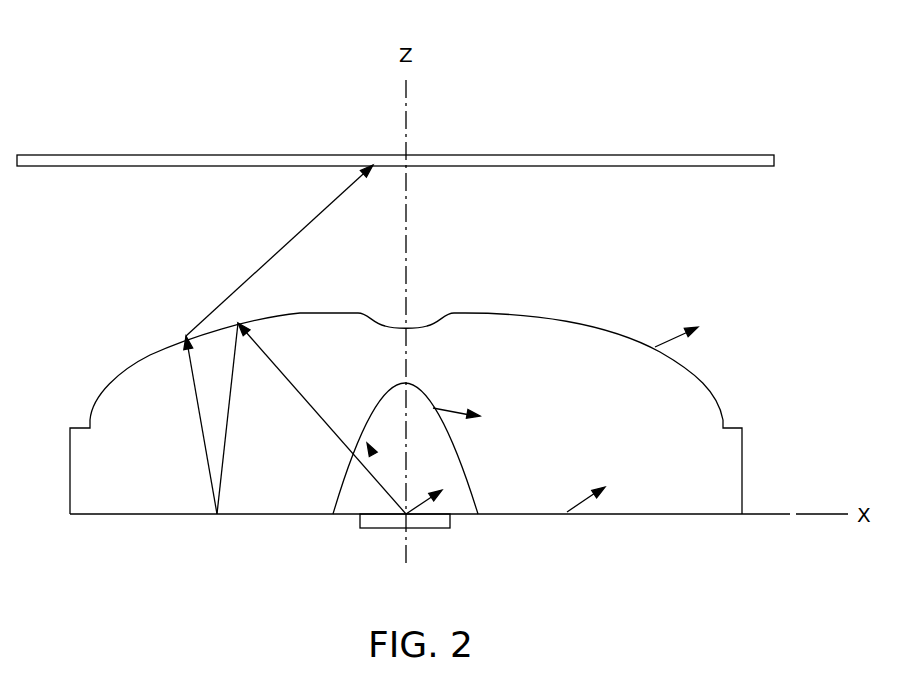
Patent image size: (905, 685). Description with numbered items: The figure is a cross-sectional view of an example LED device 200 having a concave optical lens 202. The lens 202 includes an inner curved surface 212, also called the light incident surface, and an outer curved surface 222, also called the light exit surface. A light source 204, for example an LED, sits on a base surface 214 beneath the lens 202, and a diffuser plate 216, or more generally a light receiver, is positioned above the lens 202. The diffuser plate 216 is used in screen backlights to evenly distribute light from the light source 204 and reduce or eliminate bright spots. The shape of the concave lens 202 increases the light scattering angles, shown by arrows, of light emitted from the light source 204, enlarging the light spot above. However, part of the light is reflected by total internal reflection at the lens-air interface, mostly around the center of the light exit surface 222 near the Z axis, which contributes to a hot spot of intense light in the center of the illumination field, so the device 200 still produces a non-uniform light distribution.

The LED device 200 is at (793, 43).
The concave optical lens 202 is at (413, 379).
The light source 204 is at (435, 523).
The inner curved surface 212 is at (428, 392).
The base surface 214 is at (690, 514).
The diffuser plate 216 is at (97, 158).
The outer curved surface 222 is at (545, 318).